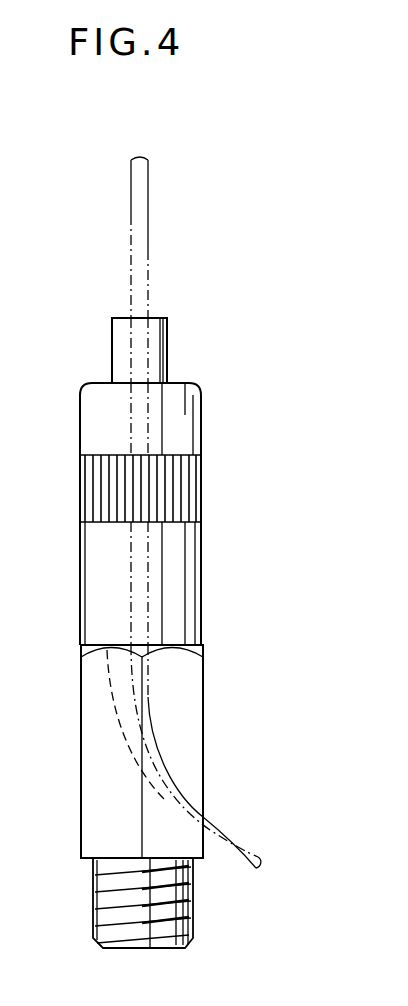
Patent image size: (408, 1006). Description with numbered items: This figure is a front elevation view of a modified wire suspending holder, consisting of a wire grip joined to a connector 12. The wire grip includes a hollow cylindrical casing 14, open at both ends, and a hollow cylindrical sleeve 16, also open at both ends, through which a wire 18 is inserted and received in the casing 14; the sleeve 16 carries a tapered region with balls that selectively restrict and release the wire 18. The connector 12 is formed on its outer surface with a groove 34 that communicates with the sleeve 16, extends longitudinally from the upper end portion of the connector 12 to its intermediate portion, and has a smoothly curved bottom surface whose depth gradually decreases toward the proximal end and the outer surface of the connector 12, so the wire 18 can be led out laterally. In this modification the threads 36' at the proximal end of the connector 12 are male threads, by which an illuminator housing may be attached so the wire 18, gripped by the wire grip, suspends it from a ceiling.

The connector 12 is at (92, 762).
The casing 14 is at (192, 582).
The sleeve 16 is at (160, 348).
The wire 18 is at (149, 226).
The groove 34 is at (199, 723).
The threads 36' is at (187, 902).